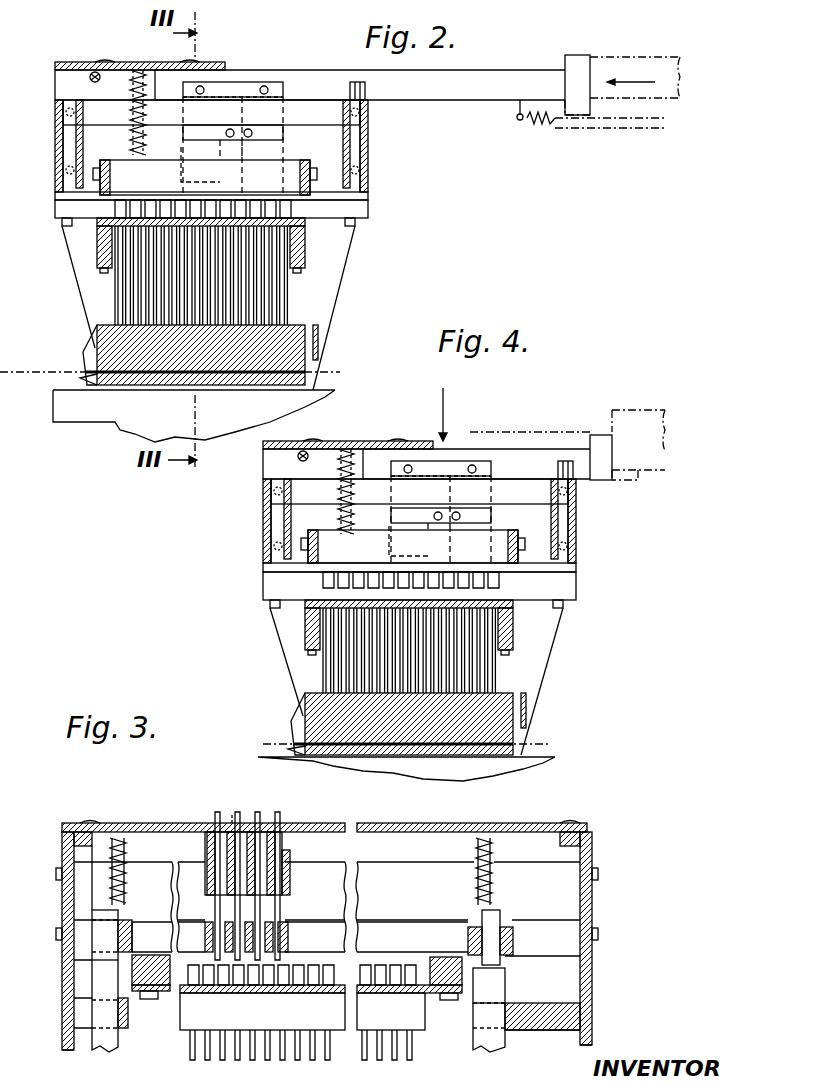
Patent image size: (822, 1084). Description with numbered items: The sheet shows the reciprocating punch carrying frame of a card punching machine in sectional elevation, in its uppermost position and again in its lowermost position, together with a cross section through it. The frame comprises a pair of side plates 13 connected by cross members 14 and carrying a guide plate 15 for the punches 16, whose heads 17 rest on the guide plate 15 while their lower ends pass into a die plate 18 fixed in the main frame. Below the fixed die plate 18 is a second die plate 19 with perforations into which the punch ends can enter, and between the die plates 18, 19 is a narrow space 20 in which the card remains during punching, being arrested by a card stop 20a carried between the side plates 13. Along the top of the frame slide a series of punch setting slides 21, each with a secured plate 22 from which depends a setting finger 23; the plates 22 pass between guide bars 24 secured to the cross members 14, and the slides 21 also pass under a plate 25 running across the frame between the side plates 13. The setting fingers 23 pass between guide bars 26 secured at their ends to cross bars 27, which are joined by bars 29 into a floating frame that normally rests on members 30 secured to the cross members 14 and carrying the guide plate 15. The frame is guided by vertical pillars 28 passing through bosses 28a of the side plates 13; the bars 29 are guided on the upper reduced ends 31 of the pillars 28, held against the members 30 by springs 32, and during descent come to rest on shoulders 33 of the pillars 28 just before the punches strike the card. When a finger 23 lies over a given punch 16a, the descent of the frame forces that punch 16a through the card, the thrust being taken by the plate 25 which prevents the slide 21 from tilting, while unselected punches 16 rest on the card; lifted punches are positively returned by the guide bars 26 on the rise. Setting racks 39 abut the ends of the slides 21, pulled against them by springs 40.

In FIG. 2, the side plates 13 is at (270, 206).
In FIG. 4, the side plates 13 is at (436, 694).
In FIG. 3, the side plates 13 is at (68, 972).
In FIG. 2, the cross members 14 is at (3, 80).
In FIG. 4, the cross members 14 is at (398, 522).
In FIG. 3, the cross members 14 is at (568, 888).
In FIG. 2, the guide plate 15 is at (165, 245).
In FIG. 4, the guide plate 15 is at (351, 644).
In FIG. 3, the guide plate 15 is at (218, 990).
In FIG. 2, the punches 16 is at (65, 224).
In FIG. 4, the punches 16 is at (369, 655).
In FIG. 3, the punches 16 is at (310, 1048).
In FIG. 2, the punch 16a is at (177, 256).
In FIG. 4, the punch 16a is at (467, 609).
In FIG. 2, the heads 17 is at (243, 219).
In FIG. 4, the heads 17 is at (448, 590).
In FIG. 3, the heads 17 is at (400, 962).
In FIG. 2, the die plate 18 is at (165, 351).
In FIG. 4, the die plate 18 is at (356, 724).
In FIG. 2, the second die plate 19 is at (61, 380).
In FIG. 4, the second die plate 19 is at (262, 757).
In FIG. 2, the space 20 is at (170, 359).
In FIG. 4, the space 20 is at (370, 742).
In FIG. 2, the card stop 20a is at (345, 339).
In FIG. 4, the card stop 20a is at (559, 712).
In FIG. 2, the punch setting slides 21 is at (428, 33).
In FIG. 4, the punch setting slides 21 is at (476, 436).
In FIG. 3, the punch setting slides 21 is at (262, 822).
In FIG. 2, the plate 22 is at (175, 20).
In FIG. 4, the plate 22 is at (482, 433).
In FIG. 3, the plate 22 is at (282, 870).
In FIG. 2, the setting finger 23 is at (185, 93).
In FIG. 4, the setting finger 23 is at (463, 521).
In FIG. 3, the setting finger 23 is at (275, 920).
In FIG. 2, the guide bars 24 is at (253, 50).
In FIG. 4, the guide bars 24 is at (380, 514).
In FIG. 3, the guide bars 24 is at (287, 882).
In FIG. 2, the plate 25 is at (63, 0).
In FIG. 4, the plate 25 is at (348, 443).
In FIG. 3, the plate 25 is at (185, 832).
In FIG. 2, the guide bars 26 is at (194, 198).
In FIG. 4, the guide bars 26 is at (379, 601).
In FIG. 3, the guide bars 26 is at (288, 940).
In FIG. 2, the cross bars 27 is at (253, 160).
In FIG. 4, the cross bars 27 is at (393, 571).
In FIG. 3, the cross bars 27 is at (383, 945).
In FIG. 3, the vertical pillars 28 is at (112, 1040).
In FIG. 3, the bosses 28a is at (92, 1005).
In FIG. 3, the bars 29 is at (122, 938).
In FIG. 3, the members 30 is at (150, 999).
In FIG. 3, the upper reduced ends 31 is at (105, 918).
In FIG. 2, the springs 32 is at (129, 91).
In FIG. 4, the springs 32 is at (332, 473).
In FIG. 3, the springs 32 is at (112, 840).
In FIG. 3, the shoulders 33 is at (118, 968).
In FIG. 2, the setting racks 39 is at (622, 65).
In FIG. 4, the setting racks 39 is at (625, 421).
In FIG. 3, the setting racks 39 is at (232, 815).
In FIG. 2, the springs 40 is at (591, 149).